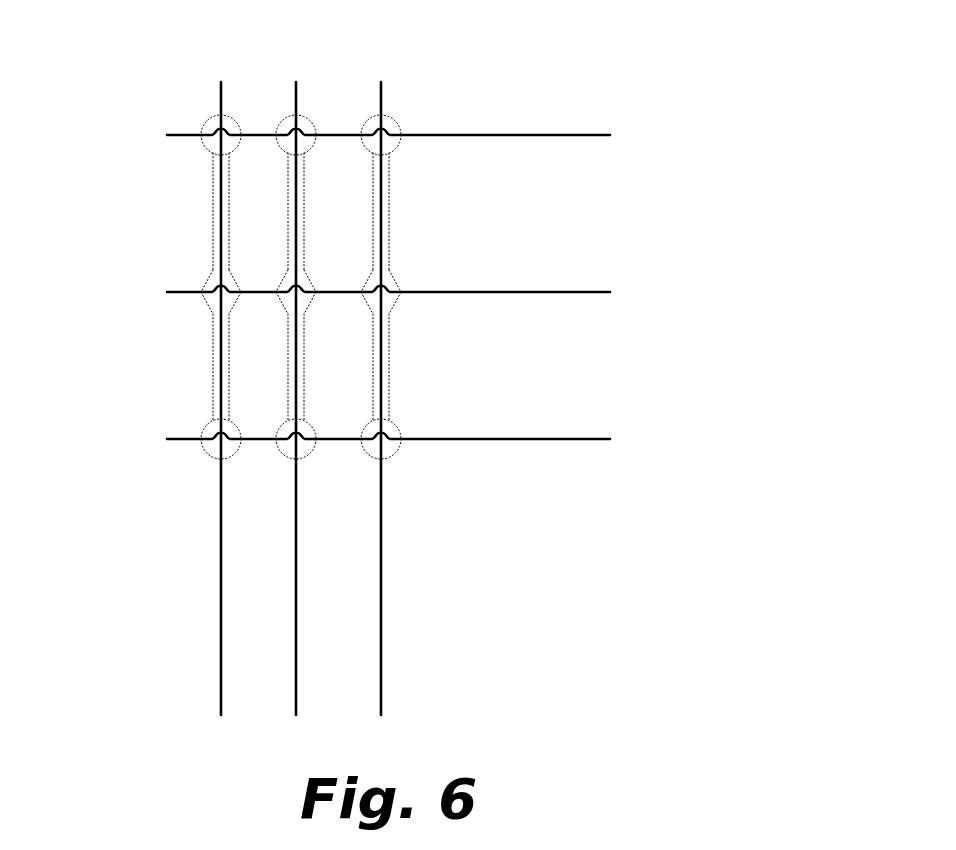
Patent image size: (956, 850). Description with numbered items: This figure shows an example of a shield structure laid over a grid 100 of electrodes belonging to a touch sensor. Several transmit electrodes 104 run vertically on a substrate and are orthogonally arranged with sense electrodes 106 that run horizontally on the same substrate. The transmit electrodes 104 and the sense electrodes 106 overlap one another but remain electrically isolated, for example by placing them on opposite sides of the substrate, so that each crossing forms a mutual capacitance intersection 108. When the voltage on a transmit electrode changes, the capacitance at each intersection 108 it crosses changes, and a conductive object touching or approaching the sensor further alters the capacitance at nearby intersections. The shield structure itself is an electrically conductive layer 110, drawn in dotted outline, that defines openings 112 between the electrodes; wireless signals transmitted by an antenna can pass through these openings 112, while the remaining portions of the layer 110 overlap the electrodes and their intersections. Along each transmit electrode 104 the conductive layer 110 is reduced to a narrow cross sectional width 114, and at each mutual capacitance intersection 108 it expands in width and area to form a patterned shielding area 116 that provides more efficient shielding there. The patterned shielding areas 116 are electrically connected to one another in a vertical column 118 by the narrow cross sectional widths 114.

The grid 100 is at (105, 105).
The transmit electrodes 104 is at (221, 543).
The sense electrodes 106 is at (478, 135).
The mutual capacitance intersections 108 is at (197, 281).
The electrically conductive layer 110 is at (192, 428).
The openings 112 is at (342, 248).
The narrow cross sectional width 114 is at (213, 373).
The patterned shielding area 116 is at (395, 430).
The vertical column 118 is at (418, 262).